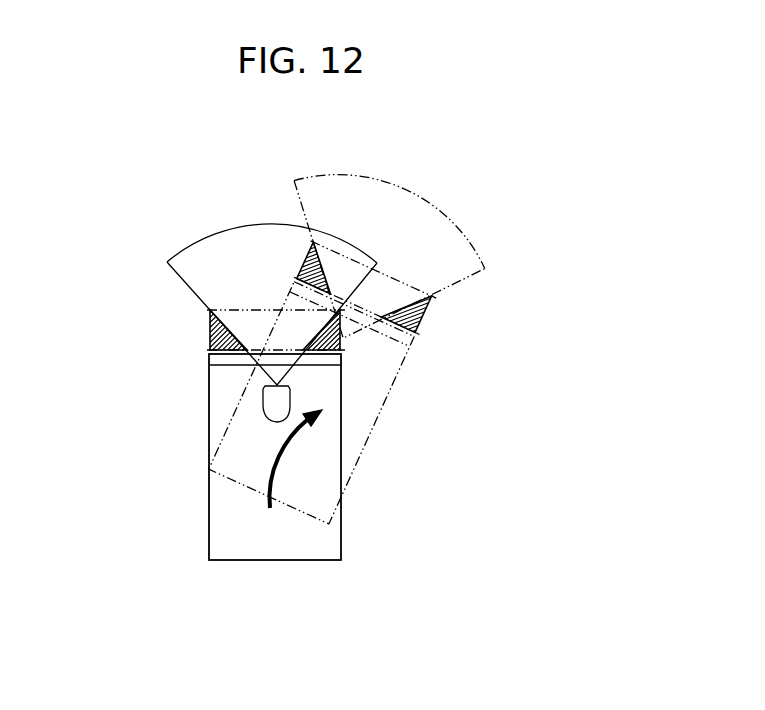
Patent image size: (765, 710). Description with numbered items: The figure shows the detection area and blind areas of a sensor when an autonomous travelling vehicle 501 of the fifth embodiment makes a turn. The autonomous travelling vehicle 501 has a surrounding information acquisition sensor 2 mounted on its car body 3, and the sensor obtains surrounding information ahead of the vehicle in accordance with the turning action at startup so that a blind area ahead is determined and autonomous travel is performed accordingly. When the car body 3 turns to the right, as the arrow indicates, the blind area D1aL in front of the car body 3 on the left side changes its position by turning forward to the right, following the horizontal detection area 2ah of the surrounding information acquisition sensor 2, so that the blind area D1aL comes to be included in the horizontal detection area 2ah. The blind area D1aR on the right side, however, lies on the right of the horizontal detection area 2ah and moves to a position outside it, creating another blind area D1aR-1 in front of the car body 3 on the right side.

The horizontal detection area 2ah is at (230, 242).
The blind area D1aL is at (207, 328).
The blind area D1aR is at (337, 347).
The blind area D1aR-1 is at (433, 310).
The surrounding information acquisition sensor 2 is at (270, 405).
The car body 3 is at (270, 543).
The autonomous travelling vehicle 501 is at (183, 498).